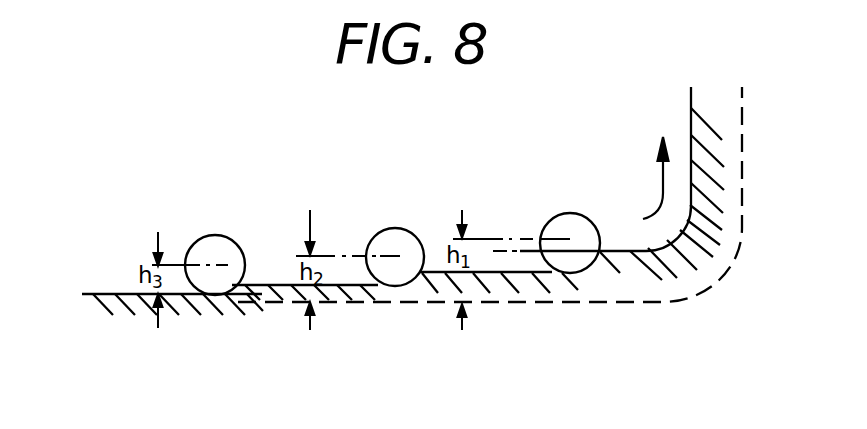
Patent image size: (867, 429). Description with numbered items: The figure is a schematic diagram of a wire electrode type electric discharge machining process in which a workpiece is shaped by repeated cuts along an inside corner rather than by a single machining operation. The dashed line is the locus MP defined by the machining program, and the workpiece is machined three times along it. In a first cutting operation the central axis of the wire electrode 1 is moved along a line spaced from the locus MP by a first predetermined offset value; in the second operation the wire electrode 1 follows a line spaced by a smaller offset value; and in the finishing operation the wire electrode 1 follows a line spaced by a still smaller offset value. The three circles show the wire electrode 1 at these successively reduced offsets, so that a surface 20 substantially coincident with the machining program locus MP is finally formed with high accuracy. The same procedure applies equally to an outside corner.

The wire electrode 1 is at (232, 248).
The surface 20 is at (100, 294).
The locus of the machining program MP is at (663, 302).